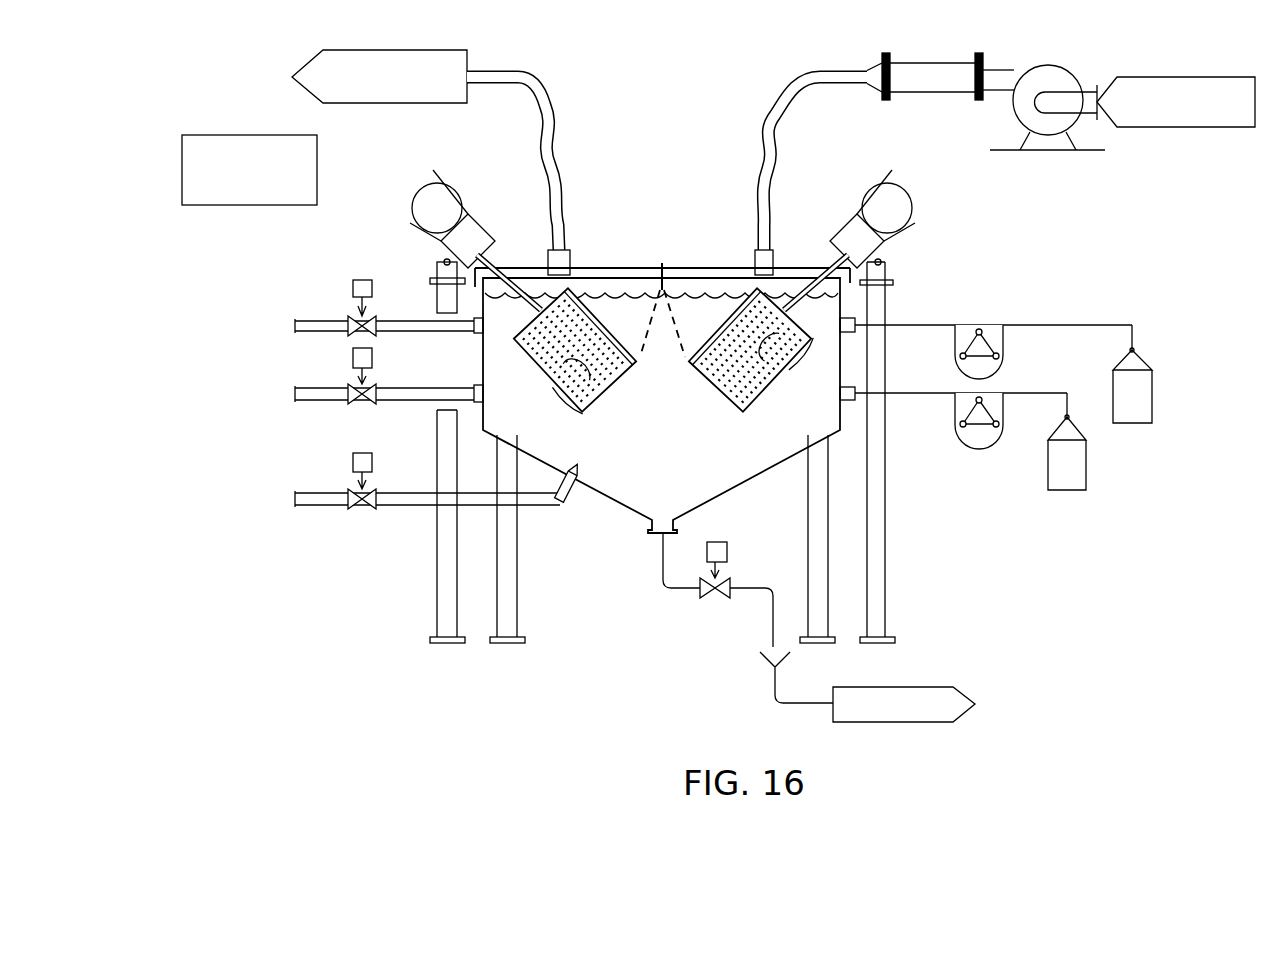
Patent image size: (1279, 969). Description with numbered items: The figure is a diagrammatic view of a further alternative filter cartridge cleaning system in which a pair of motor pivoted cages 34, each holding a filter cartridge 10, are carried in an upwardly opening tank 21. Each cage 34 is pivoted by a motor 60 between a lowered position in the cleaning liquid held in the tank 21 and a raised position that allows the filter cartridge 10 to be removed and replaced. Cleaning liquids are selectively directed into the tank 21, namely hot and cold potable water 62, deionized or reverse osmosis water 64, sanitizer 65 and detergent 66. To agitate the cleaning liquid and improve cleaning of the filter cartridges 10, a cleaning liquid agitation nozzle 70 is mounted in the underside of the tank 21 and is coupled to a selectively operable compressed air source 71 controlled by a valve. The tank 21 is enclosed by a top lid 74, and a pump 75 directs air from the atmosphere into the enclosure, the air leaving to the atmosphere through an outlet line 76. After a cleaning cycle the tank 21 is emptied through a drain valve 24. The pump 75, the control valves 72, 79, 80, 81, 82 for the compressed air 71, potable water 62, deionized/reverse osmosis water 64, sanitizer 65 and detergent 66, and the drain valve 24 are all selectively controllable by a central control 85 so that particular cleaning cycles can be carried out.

The filter cartridge 10 is at (570, 363).
The tank 21 is at (852, 422).
The drain valve 24 is at (717, 601).
The filter cartridge cage 34 is at (602, 323).
The motor 60 is at (453, 200).
The hot and cold potable water 62 is at (210, 406).
The deionized or reverse osmosis water 64 is at (260, 338).
The sanitizer 65 is at (1150, 372).
The detergent 66 is at (1095, 476).
The cleaning liquid agitation nozzle 70 is at (574, 482).
The compressed air source 71 is at (278, 513).
The control valve 72 is at (358, 509).
The top lid 74 is at (648, 268).
The pump 75 is at (1062, 68).
The outlet line 76 is at (565, 112).
The control valve 79 is at (365, 405).
The control valve 80 is at (373, 318).
The control valve 81 is at (1003, 332).
The control valve 82 is at (993, 407).
The central control 85 is at (248, 135).